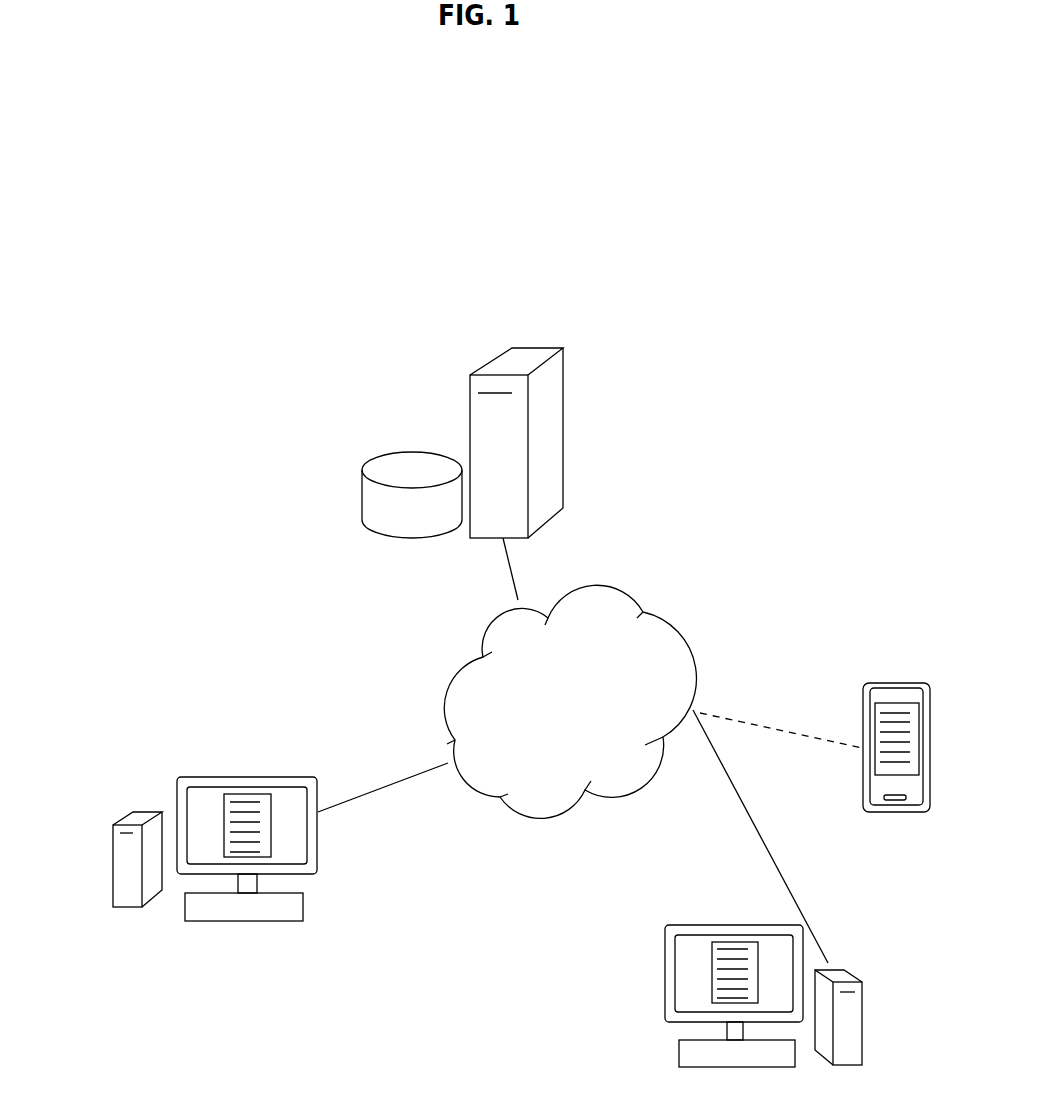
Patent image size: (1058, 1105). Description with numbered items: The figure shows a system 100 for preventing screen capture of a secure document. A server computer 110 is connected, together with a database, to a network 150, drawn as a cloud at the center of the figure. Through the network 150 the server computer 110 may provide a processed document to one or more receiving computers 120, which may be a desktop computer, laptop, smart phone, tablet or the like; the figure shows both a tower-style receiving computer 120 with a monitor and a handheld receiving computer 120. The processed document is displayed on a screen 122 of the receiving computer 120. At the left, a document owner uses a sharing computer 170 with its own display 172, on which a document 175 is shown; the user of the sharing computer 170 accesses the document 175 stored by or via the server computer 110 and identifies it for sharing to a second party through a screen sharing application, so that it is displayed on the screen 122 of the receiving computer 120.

The system 100 is at (718, 262).
The server computer 110 is at (487, 372).
The receiving computer 120 is at (856, 1035).
The screen 122 is at (695, 974).
The network 150 is at (550, 716).
The sharing computer 170 is at (125, 860).
The client device display 172 is at (285, 827).
The document 175 is at (268, 828).